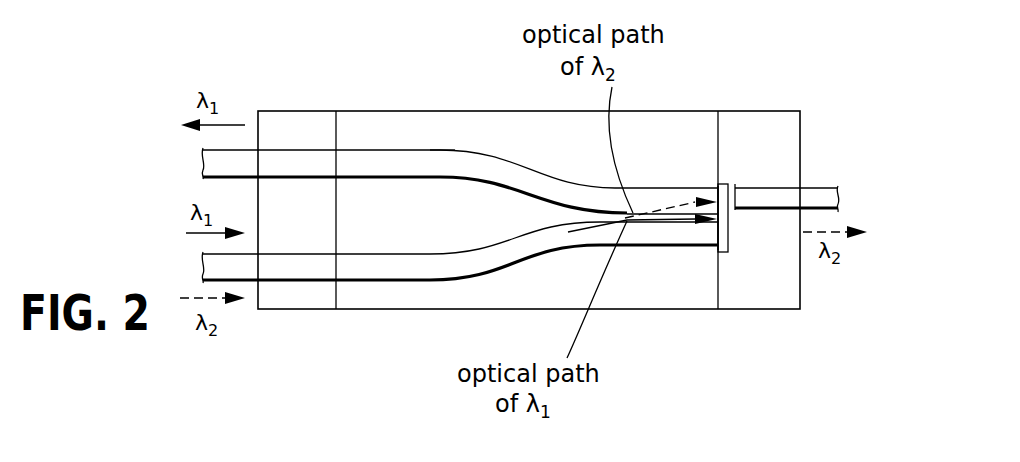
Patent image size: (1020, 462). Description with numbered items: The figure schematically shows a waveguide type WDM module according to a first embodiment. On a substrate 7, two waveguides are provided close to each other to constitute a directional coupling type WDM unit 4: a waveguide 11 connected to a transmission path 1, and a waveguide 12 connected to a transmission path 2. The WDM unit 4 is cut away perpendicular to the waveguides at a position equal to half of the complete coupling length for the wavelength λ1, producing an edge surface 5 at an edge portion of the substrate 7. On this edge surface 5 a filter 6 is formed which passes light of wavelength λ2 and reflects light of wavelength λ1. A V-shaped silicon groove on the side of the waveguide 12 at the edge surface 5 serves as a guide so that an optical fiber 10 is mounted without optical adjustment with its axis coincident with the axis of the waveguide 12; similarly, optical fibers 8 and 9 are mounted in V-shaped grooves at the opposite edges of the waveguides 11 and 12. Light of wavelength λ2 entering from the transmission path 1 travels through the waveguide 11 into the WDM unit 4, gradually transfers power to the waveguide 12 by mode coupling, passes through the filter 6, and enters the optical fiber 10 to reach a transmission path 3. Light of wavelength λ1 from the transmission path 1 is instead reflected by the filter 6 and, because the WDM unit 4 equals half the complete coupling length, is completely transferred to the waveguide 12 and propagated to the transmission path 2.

The transmission path 1 is at (196, 268).
The transmission path 2 is at (196, 163).
The transmission path 3 is at (843, 196).
The directional coupling type WDM unit 4 is at (675, 188).
The edge surface 5 is at (713, 252).
The filter 6 is at (732, 243).
The substrate 7 is at (435, 111).
The optical fiber 8 is at (295, 280).
The optical fiber 9 is at (318, 150).
The optical fiber 10 is at (765, 178).
The waveguide 11 is at (388, 280).
The waveguide 12 is at (410, 150).